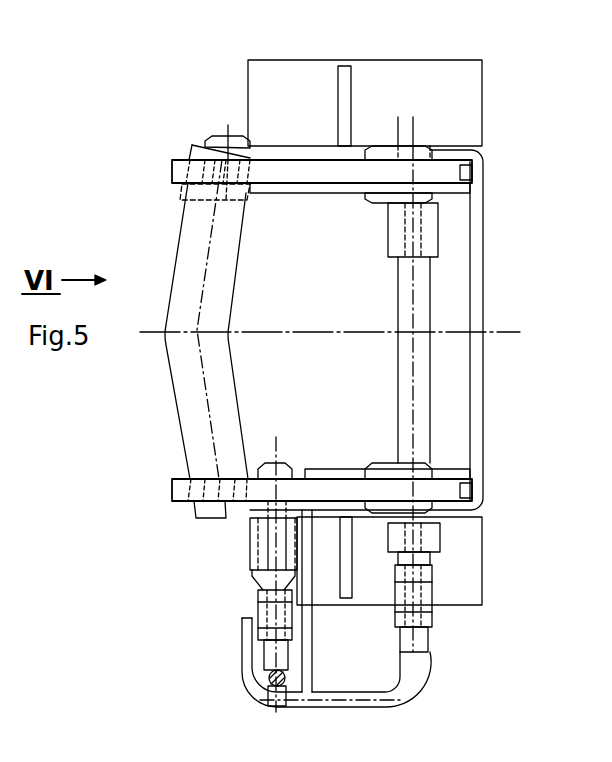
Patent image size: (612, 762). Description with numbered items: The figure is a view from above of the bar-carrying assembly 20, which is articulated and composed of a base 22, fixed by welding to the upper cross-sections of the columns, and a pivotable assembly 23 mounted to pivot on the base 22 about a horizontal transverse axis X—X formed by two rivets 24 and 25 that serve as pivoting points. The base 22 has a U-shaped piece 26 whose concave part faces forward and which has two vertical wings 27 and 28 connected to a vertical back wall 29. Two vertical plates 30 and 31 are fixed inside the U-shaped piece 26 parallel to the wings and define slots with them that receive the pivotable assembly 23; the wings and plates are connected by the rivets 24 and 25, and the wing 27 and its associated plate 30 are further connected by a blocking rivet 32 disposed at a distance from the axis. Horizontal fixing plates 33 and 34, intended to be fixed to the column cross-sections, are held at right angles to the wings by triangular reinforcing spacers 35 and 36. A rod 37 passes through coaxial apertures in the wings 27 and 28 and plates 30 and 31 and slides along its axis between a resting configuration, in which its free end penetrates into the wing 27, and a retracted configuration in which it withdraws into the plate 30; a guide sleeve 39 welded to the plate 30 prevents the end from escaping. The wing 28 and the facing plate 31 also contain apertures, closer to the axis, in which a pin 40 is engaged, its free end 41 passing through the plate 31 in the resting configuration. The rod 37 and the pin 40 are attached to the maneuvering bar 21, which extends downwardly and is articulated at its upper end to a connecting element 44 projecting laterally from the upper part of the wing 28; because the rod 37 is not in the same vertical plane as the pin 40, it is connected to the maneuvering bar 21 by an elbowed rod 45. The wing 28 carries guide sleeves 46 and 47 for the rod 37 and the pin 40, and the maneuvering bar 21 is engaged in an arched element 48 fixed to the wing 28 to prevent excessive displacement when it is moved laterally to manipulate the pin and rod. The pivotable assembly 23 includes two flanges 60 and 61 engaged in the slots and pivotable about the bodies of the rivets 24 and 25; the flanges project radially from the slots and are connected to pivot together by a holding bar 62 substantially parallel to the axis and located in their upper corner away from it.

The bar-carrying assembly 20 is at (198, 104).
The maneuvering bar 21 is at (262, 693).
The base 22 is at (423, 595).
The pivotable assembly 23 is at (171, 234).
The rivet 24 is at (420, 142).
The rivet 25 is at (420, 462).
The U-shaped piece 26 is at (483, 153).
The vertical wing 27 is at (353, 160).
The vertical wing 28 is at (318, 525).
The vertical back wall 29 is at (483, 285).
The vertical plate 30 is at (297, 194).
The vertical plate 31 is at (355, 453).
The blocking rivet 32 is at (237, 128).
The horizontal fixing plate 33 is at (483, 82).
The horizontal fixing plate 34 is at (483, 568).
The triangular reinforcing spacer 35 is at (352, 80).
The triangular reinforcing spacer 36 is at (340, 582).
The rod 37 is at (397, 372).
The guide sleeve 39 is at (385, 228).
The pin 40 is at (308, 470).
The free end of the pin 41 is at (225, 559).
The connecting element 44 is at (250, 535).
The elbowed rod 45 is at (422, 683).
The guide sleeve 46 is at (440, 534).
The guide sleeve 47 is at (252, 558).
The arched element 48 is at (242, 643).
The flange 60 is at (470, 173).
The flange 61 is at (462, 490).
The holding bar 62 is at (166, 366).